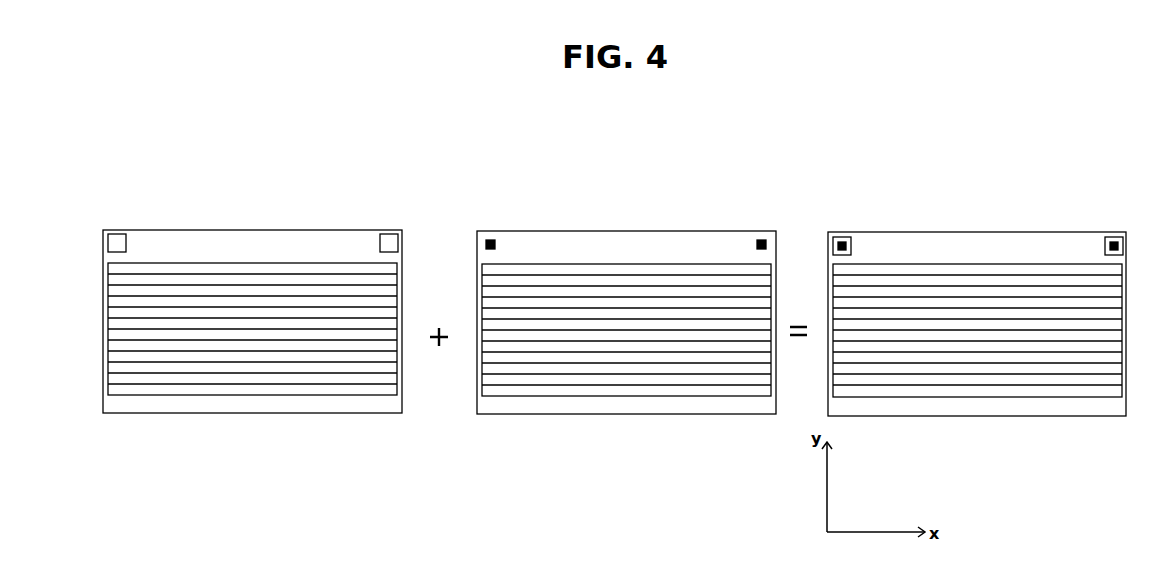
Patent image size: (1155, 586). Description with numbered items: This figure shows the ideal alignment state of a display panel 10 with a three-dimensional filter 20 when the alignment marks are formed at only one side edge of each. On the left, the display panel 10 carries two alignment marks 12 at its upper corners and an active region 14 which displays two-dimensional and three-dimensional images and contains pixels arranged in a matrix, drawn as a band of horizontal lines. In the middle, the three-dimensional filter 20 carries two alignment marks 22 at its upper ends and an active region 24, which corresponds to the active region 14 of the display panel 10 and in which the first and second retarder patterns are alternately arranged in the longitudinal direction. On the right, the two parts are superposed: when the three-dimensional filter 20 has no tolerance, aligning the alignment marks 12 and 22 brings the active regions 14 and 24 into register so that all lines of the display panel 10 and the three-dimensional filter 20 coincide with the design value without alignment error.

The display panel 10 is at (252, 230).
The alignment mark 12 is at (117, 233).
The active region 14 is at (309, 263).
The 3D filter 20 is at (627, 231).
The alignment mark 22 is at (490, 240).
The active region 24 is at (683, 264).